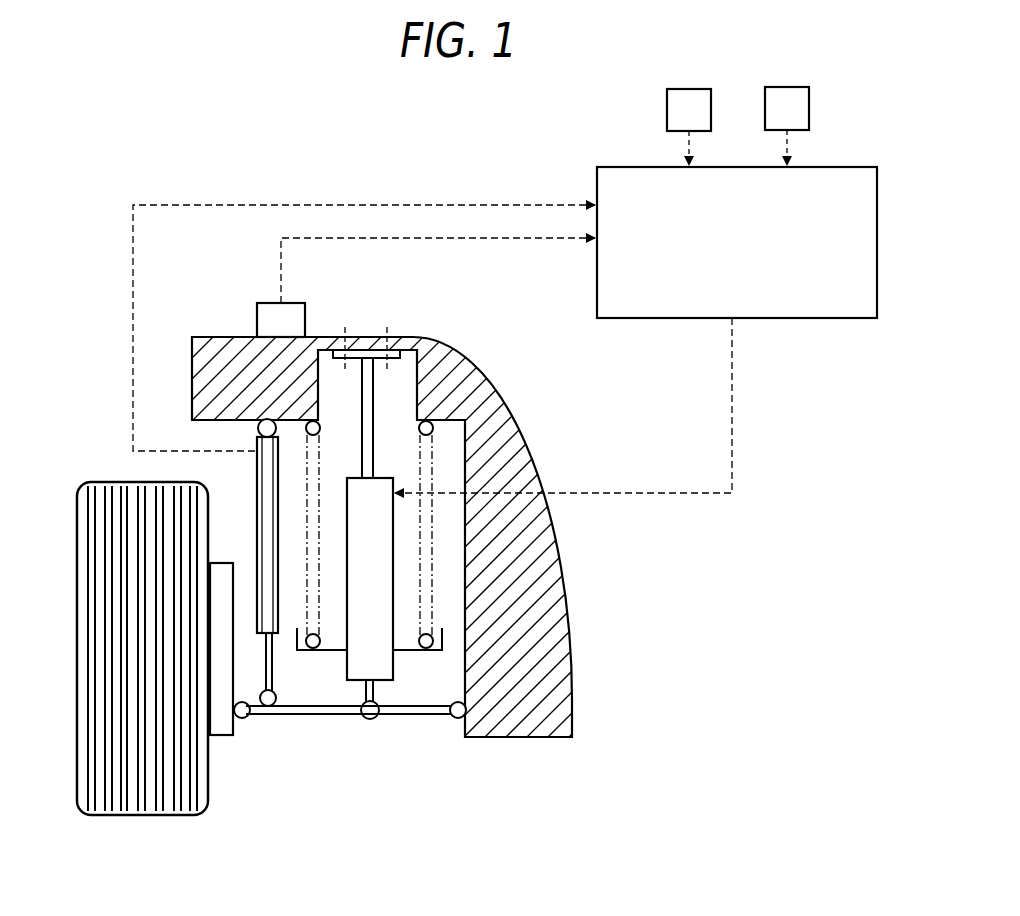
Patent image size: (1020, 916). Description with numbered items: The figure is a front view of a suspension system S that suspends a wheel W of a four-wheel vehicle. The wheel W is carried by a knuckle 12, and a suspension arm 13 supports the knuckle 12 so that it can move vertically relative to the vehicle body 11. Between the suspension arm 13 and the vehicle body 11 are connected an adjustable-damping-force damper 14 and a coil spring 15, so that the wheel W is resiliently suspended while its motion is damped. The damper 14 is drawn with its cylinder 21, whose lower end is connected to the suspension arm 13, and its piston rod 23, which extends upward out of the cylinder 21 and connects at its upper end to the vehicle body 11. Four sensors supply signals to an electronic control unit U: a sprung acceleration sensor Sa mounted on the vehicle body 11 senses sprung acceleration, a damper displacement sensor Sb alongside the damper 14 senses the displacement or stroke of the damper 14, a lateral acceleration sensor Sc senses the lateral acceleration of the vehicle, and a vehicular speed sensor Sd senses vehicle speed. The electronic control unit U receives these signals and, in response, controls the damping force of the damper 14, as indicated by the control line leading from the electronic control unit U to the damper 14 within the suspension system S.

The vehicle body 11 is at (202, 345).
The knuckle 12 is at (217, 573).
The suspension arm 13 is at (323, 714).
The damper 14 is at (338, 660).
The coil spring 15 is at (316, 435).
The cylinder 21 is at (393, 662).
The piston rod 23 is at (371, 464).
The wheel W is at (88, 494).
The suspension system S is at (351, 730).
The sprung acceleration sensor Sa is at (263, 313).
The damper displacement sensor Sb is at (263, 500).
The lateral acceleration sensor Sc is at (703, 121).
The vehicular speed sensor Sd is at (801, 120).
The electronic control unit U is at (746, 251).